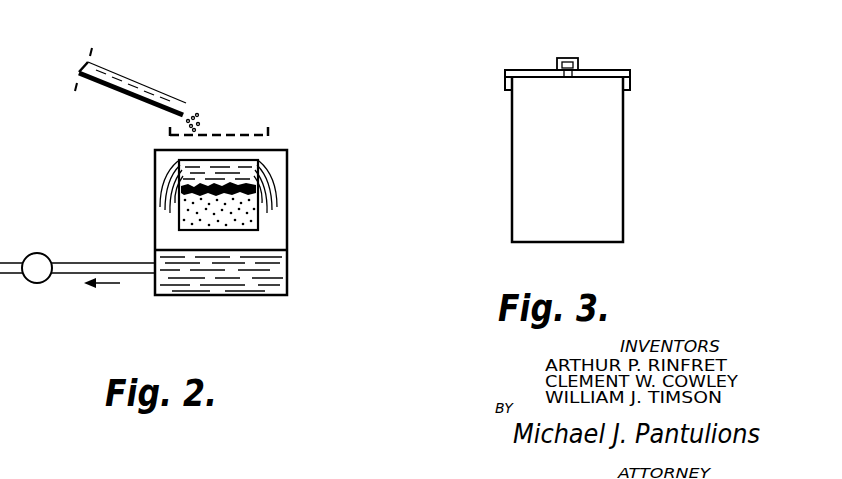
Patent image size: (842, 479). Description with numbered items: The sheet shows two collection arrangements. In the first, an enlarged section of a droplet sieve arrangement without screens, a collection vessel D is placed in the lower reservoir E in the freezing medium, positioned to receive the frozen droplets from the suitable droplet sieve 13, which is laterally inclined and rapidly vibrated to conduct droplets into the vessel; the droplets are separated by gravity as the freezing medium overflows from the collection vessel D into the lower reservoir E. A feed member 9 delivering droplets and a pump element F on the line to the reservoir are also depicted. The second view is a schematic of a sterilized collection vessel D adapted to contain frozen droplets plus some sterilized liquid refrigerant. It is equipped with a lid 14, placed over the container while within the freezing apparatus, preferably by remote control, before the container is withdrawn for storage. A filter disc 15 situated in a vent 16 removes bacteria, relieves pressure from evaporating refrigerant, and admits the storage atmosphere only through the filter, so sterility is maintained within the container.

In FIG. 2, the feed chute 9 is at (123, 93).
In FIG. 2, the droplet sieve 13 is at (248, 137).
In FIG. 3, the lid 14 is at (508, 80).
In FIG. 3, the filter disc 15 is at (568, 77).
In FIG. 3, the vent 16 is at (557, 60).
In FIG. 2, the collection vessel D is at (250, 217).
In FIG. 3, the collection vessel D is at (610, 135).
In FIG. 2, the lower reservoir E is at (272, 242).
In FIG. 2, the pump F is at (38, 283).